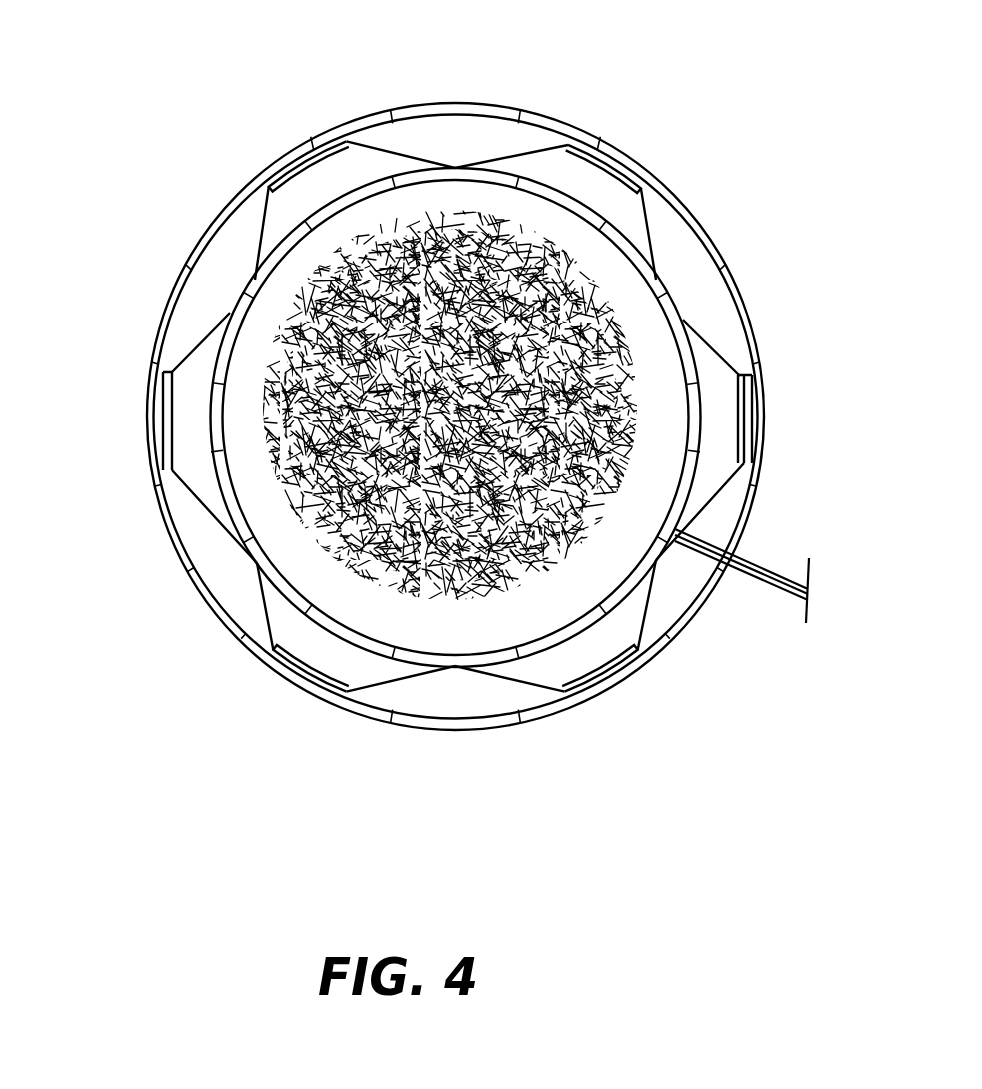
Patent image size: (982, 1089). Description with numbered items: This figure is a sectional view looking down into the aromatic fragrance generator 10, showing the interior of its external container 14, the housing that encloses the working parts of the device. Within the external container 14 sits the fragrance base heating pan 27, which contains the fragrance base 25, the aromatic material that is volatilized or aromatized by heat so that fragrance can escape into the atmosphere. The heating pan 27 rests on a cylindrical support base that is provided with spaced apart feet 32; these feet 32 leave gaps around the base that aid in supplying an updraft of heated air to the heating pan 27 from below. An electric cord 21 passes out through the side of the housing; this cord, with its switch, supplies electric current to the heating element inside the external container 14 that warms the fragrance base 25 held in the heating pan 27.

The aromatic fragrance generator 10 is at (757, 300).
The external container 14 is at (762, 443).
The electric cord 21 is at (778, 590).
The fragrance base 25 is at (317, 468).
The heating pan 27 is at (458, 660).
The feet 32 is at (560, 163).